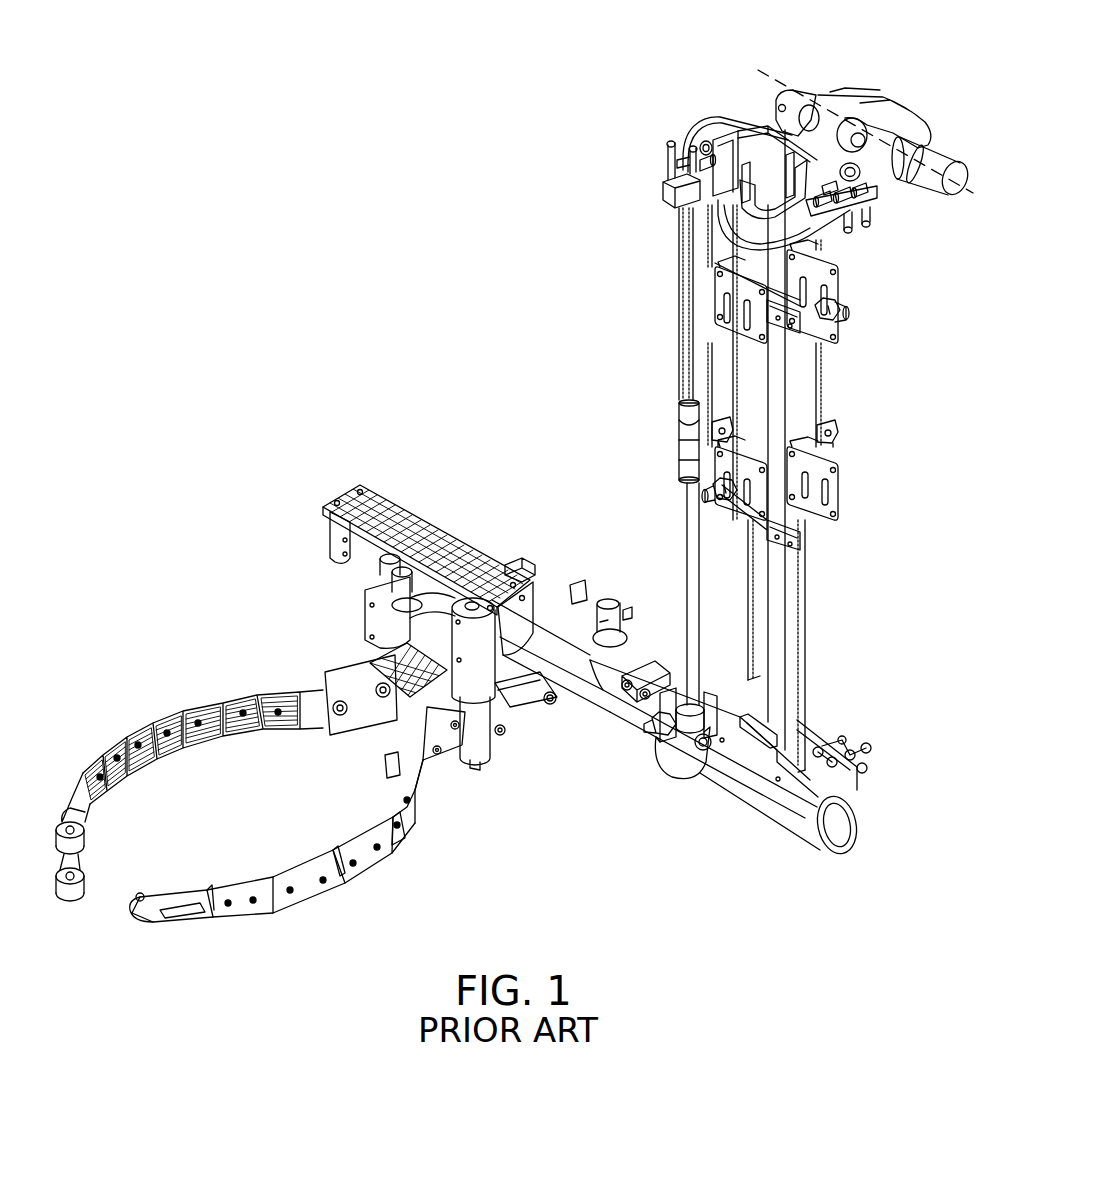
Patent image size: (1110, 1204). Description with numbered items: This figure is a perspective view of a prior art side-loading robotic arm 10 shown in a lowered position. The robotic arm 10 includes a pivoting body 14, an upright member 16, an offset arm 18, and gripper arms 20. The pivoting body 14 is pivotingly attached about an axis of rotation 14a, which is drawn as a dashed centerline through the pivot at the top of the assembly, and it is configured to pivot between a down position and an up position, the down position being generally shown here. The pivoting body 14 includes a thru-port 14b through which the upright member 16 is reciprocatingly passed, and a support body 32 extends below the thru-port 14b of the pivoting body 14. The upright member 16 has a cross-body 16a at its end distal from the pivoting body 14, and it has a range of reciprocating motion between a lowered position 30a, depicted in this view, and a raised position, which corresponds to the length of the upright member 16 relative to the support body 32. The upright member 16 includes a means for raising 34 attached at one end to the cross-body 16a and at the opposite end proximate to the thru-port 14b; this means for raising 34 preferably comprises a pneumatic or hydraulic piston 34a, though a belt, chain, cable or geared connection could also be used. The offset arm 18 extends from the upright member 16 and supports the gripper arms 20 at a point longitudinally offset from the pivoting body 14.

The side-loading robotic arm 10 is at (483, 339).
The pivoting body 14 is at (783, 118).
The axis of rotation 14a is at (770, 68).
The thru-port 14b is at (793, 210).
The upright member 16 is at (795, 627).
The cross-body 16a is at (743, 797).
The offset arm 18 is at (592, 705).
The gripper arms 20 is at (188, 692).
The lowered position 30a is at (648, 505).
The support body 32 is at (810, 366).
The means for raising 34 is at (660, 312).
The piston 34a is at (697, 350).